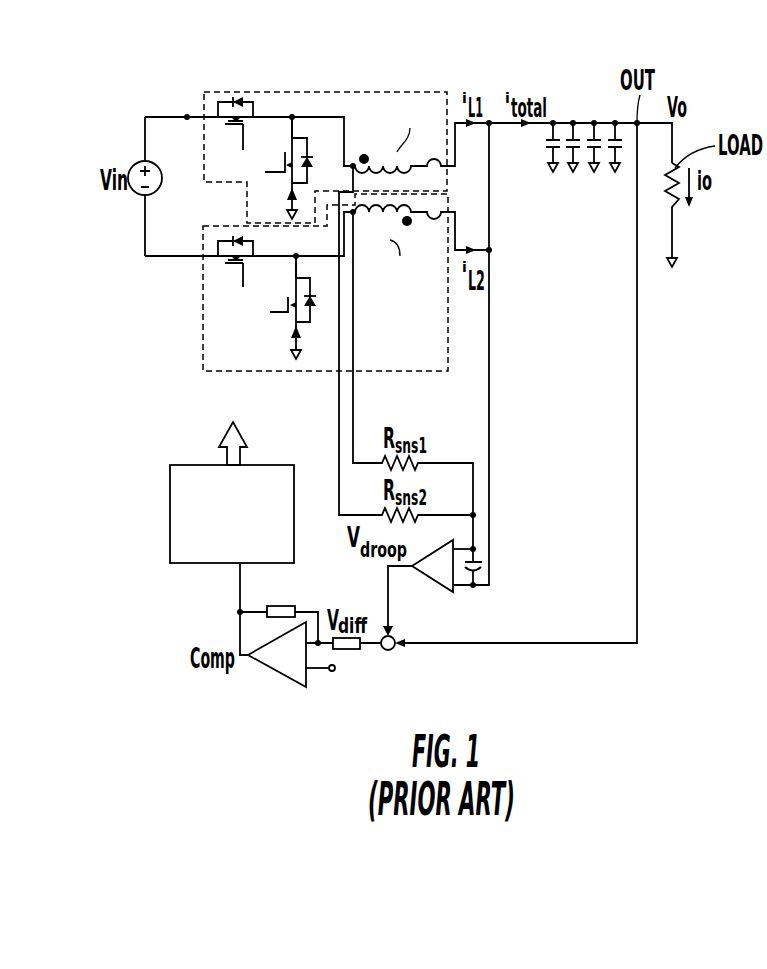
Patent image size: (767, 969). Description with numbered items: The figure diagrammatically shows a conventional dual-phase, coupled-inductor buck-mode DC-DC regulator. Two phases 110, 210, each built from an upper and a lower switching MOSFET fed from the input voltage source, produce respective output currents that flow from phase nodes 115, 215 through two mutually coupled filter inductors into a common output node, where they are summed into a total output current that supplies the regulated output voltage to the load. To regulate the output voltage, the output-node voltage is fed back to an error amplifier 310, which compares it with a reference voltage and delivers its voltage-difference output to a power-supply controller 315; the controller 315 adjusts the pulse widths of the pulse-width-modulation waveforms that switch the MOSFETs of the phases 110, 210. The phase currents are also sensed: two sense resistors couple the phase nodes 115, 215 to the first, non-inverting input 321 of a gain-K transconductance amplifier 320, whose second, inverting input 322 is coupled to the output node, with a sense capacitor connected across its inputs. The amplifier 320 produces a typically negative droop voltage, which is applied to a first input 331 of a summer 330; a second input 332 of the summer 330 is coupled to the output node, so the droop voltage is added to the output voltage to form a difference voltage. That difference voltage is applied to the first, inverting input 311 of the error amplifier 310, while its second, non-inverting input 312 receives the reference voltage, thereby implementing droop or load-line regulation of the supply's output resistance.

The phase 110 is at (330, 92).
The phase node 115 is at (292, 117).
The phase 210 is at (386, 371).
The phase node 215 is at (296, 256).
The error amplifier 310 is at (283, 672).
The first, inverting (−) input 311 is at (318, 612).
The second, non-inverting (+) input 312 is at (312, 675).
The power-supply controller 315 is at (279, 465).
The transconductance amplifier 320 is at (436, 577).
The first, non-inverting (+) input 321 is at (453, 545).
The second, inverting (−) input 322 is at (460, 588).
The summer 330 is at (391, 651).
The first input 331 is at (383, 637).
The second input 332 is at (396, 648).